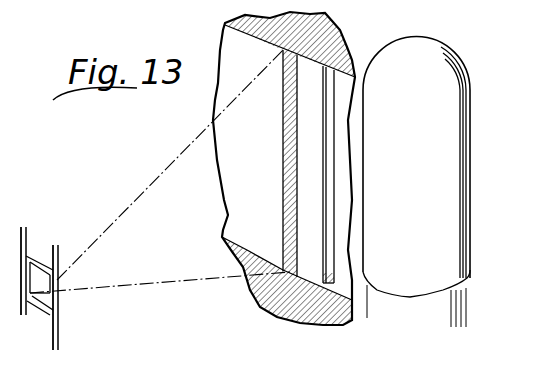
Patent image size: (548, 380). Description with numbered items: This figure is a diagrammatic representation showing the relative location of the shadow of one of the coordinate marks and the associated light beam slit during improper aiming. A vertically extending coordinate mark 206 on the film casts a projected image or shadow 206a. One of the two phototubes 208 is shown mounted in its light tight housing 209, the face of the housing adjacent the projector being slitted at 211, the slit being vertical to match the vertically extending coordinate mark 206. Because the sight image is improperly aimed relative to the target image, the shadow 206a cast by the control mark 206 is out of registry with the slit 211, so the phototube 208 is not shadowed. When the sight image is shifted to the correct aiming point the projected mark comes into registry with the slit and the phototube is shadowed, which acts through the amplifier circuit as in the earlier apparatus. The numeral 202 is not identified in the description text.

The channel member 202 is at (58, 327).
The coordinate mark 206 is at (52, 305).
The shadow 206a is at (283, 142).
The phototube 208 is at (428, 45).
The light tight housing 209 is at (340, 201).
The slit 211 is at (327, 158).